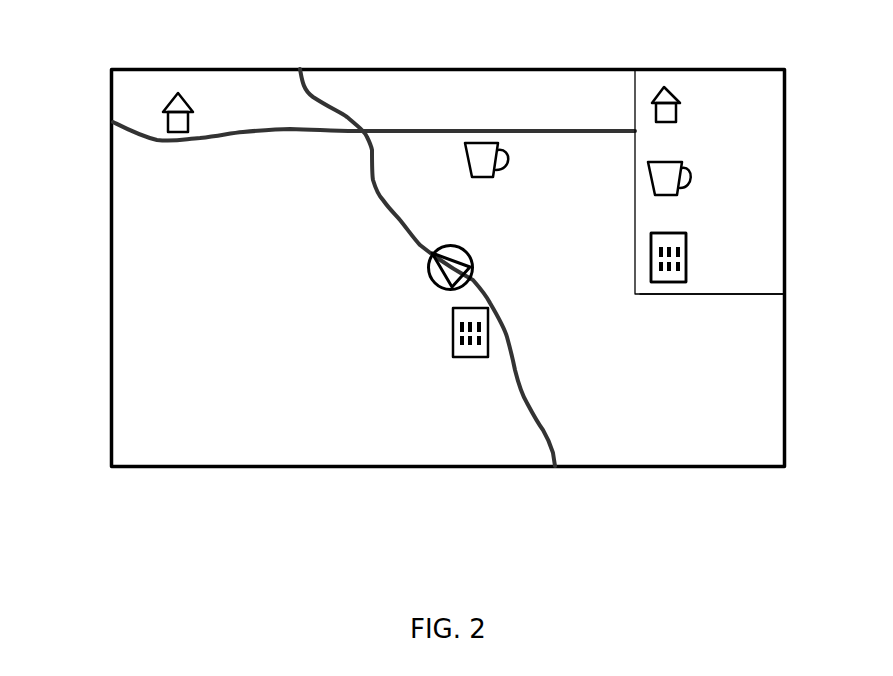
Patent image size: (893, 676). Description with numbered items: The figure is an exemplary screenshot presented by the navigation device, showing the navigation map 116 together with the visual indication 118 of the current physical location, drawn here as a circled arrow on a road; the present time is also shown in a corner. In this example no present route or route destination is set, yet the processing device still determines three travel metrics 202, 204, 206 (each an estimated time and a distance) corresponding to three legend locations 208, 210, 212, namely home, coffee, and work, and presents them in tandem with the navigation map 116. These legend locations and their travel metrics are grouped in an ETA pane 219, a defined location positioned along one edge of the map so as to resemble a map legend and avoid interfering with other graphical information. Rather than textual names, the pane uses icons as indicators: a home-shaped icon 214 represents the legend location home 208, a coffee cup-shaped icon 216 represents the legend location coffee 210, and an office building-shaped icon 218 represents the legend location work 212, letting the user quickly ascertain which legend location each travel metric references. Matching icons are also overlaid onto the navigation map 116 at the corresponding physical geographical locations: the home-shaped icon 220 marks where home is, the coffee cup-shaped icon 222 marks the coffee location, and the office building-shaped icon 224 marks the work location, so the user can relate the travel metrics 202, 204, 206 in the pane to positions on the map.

The navigation map 116 is at (143, 294).
The visual indication of the current physical location 118 is at (427, 268).
The travel metric 202 is at (773, 105).
The travel metric 204 is at (772, 183).
The travel metric 206 is at (768, 260).
The legend location "home" 208 is at (645, 103).
The legend location "coffee" 210 is at (637, 183).
The legend location "work" 212 is at (669, 283).
The home-shaped icon 214 is at (664, 90).
The coffee cup-shaped icon 216 is at (658, 185).
The office building-shaped icon 218 is at (657, 260).
The ETA pane 219 is at (745, 296).
The home-shaped icon 220 is at (177, 122).
The coffee cup-shaped icon 222 is at (483, 157).
The office building-shaped icon 224 is at (465, 353).